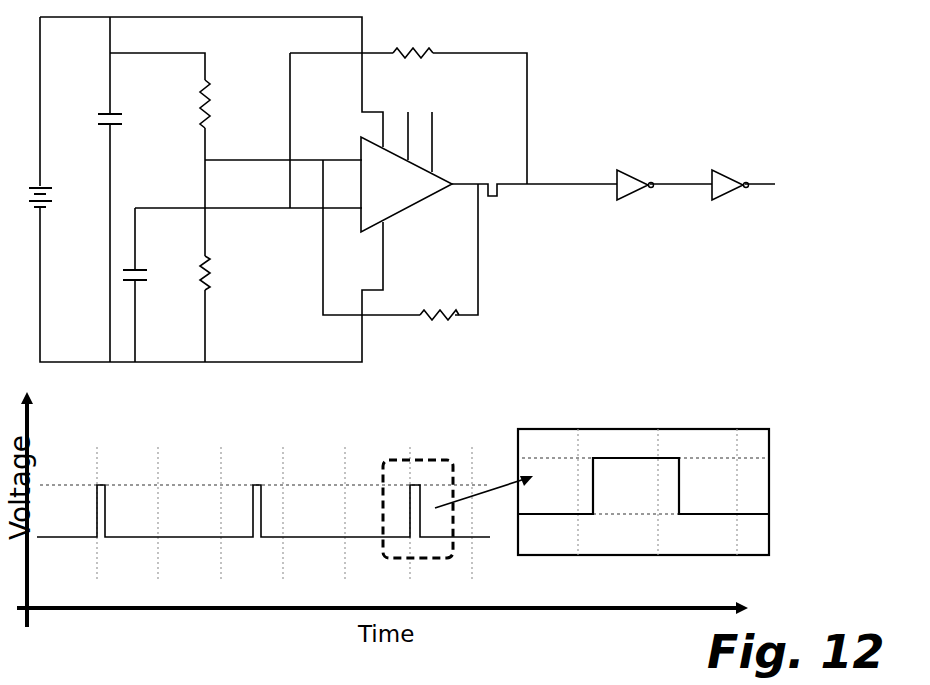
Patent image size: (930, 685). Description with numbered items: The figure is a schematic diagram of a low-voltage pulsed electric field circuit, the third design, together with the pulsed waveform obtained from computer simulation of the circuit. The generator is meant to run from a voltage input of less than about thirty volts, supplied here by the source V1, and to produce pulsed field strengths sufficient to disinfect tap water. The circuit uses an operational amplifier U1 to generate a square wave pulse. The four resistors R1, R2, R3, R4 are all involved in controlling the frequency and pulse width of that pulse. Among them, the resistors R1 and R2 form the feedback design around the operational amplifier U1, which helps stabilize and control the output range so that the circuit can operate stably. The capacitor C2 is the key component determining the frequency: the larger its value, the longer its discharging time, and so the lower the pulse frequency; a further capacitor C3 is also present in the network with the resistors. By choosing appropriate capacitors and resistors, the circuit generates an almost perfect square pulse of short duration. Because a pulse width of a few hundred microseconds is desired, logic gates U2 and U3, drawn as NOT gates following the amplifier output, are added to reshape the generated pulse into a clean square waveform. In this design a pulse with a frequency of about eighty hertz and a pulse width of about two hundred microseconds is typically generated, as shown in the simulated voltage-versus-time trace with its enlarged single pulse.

The DC voltage source 15 V V1 is at (60, 186).
The capacitor 0.1 uF C3 is at (133, 107).
The resistor R3 is at (231, 104).
The resistor R1 is at (413, 54).
The operational amplifier U1 is at (419, 173).
The resistor R2 is at (438, 315).
The capacitor C2 is at (157, 262).
The resistor R4 is at (229, 267).
The NOT gate inverter U2 is at (633, 185).
The NOT gate inverter U3 is at (728, 185).